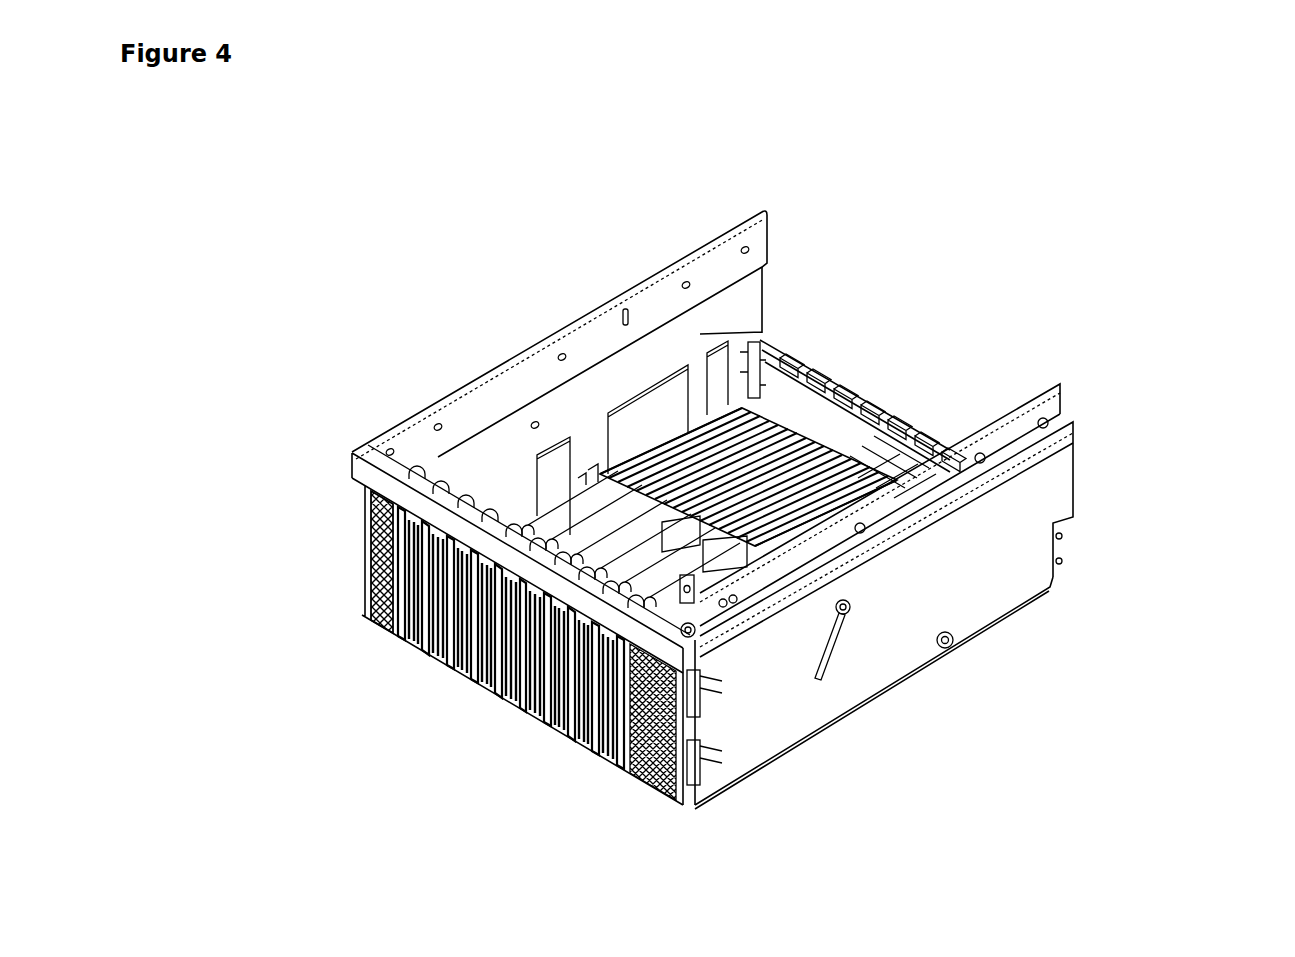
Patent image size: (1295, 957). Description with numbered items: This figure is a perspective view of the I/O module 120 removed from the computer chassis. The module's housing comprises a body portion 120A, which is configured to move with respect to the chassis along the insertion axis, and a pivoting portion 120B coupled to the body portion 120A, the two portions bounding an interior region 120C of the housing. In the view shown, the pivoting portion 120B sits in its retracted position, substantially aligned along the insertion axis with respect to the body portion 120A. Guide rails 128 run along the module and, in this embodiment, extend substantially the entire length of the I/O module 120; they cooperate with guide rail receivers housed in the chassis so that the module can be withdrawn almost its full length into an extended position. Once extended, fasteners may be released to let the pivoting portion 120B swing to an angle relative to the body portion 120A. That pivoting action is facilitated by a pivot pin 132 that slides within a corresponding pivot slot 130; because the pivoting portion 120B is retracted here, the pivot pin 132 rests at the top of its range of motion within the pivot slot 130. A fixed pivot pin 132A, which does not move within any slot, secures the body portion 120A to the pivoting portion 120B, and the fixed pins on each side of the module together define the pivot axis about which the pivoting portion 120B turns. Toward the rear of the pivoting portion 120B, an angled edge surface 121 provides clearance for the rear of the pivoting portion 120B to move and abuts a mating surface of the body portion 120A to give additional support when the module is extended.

The I/O module 120 is at (577, 258).
The body portion 120A is at (768, 710).
The pivoting portion 120B is at (362, 561).
The interior region 120C is at (810, 398).
The angled edge surface 121 is at (715, 333).
The guide rail 128 is at (910, 500).
The pivot slot 130 is at (822, 677).
The pivot pin 132 is at (949, 650).
The fixed pivot pin 132A is at (848, 614).